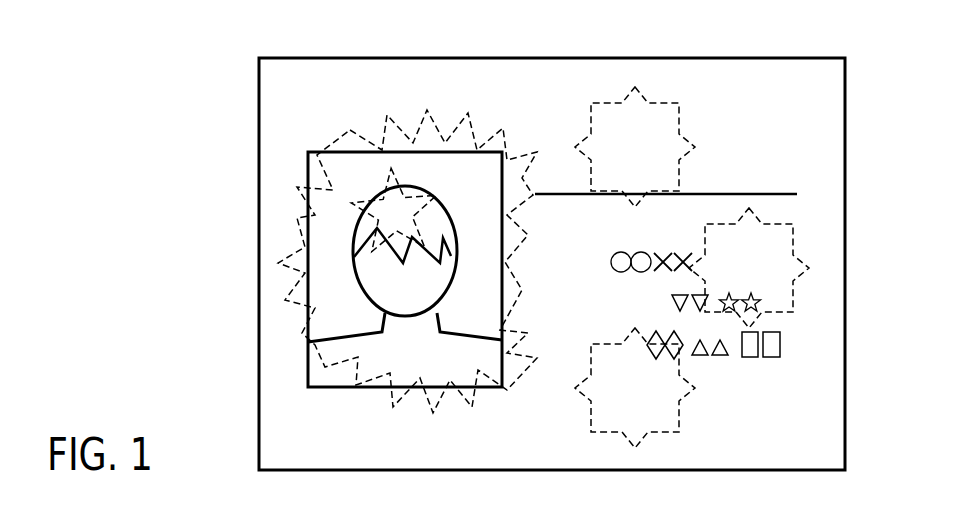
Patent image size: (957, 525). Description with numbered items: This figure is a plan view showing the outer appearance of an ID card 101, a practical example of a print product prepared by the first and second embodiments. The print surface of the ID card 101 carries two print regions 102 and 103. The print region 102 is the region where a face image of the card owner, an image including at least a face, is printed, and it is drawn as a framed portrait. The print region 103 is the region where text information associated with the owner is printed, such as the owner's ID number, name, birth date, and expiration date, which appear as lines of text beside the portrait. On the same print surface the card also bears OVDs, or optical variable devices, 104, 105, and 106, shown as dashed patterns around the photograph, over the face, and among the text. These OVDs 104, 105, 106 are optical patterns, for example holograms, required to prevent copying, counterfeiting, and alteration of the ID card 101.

The ID card 101 is at (742, 60).
The print region 102 is at (338, 378).
The print region 103 is at (700, 217).
The OVD 104 is at (365, 138).
The OVD 105 is at (392, 186).
The OVD 106 is at (795, 242).